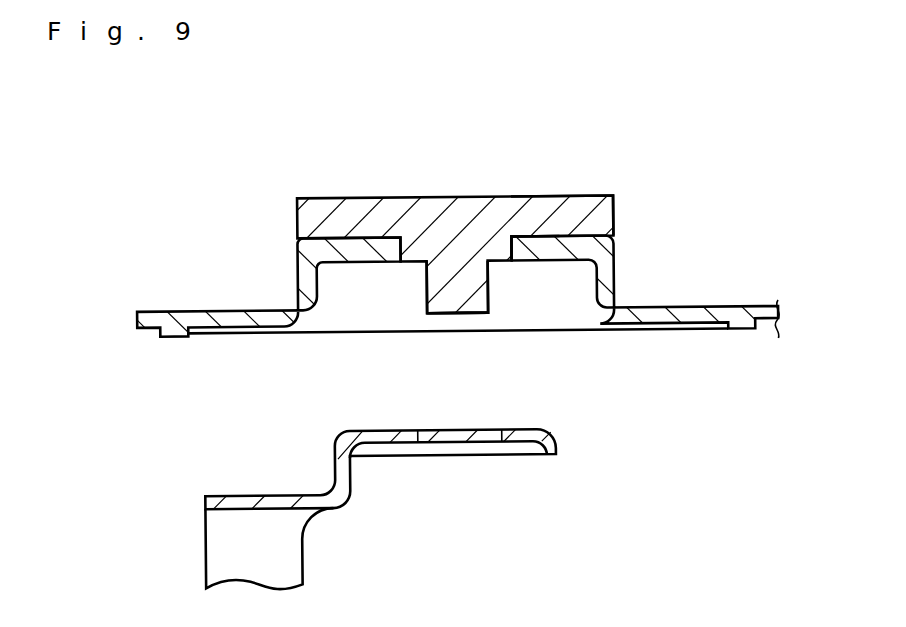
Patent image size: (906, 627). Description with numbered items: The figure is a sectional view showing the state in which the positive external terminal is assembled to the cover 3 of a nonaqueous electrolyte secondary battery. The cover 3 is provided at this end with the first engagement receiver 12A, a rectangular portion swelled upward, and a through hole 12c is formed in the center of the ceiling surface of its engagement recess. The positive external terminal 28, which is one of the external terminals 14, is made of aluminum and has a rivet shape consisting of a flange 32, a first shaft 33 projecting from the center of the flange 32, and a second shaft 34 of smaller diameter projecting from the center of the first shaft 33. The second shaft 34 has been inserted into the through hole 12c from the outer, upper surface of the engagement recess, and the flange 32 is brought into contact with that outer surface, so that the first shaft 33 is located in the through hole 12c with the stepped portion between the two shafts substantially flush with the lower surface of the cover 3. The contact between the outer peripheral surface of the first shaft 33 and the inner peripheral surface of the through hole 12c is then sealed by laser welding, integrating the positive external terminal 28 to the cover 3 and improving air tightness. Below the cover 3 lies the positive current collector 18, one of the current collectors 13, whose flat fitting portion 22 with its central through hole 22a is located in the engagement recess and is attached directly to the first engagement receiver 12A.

The cover 3 is at (190, 310).
The first engagement receiver 12A is at (611, 270).
The through hole 12c is at (512, 255).
The external terminal 14 is at (325, 208).
The positive external terminal 28 is at (457, 228).
The flange 32 is at (579, 204).
The first shaft 33 is at (500, 250).
The second shaft 34 is at (477, 309).
The fitting portion 22 is at (343, 441).
The through hole 22a is at (493, 436).
The positive current collector 18 is at (332, 548).
The current collector 13 is at (286, 562).